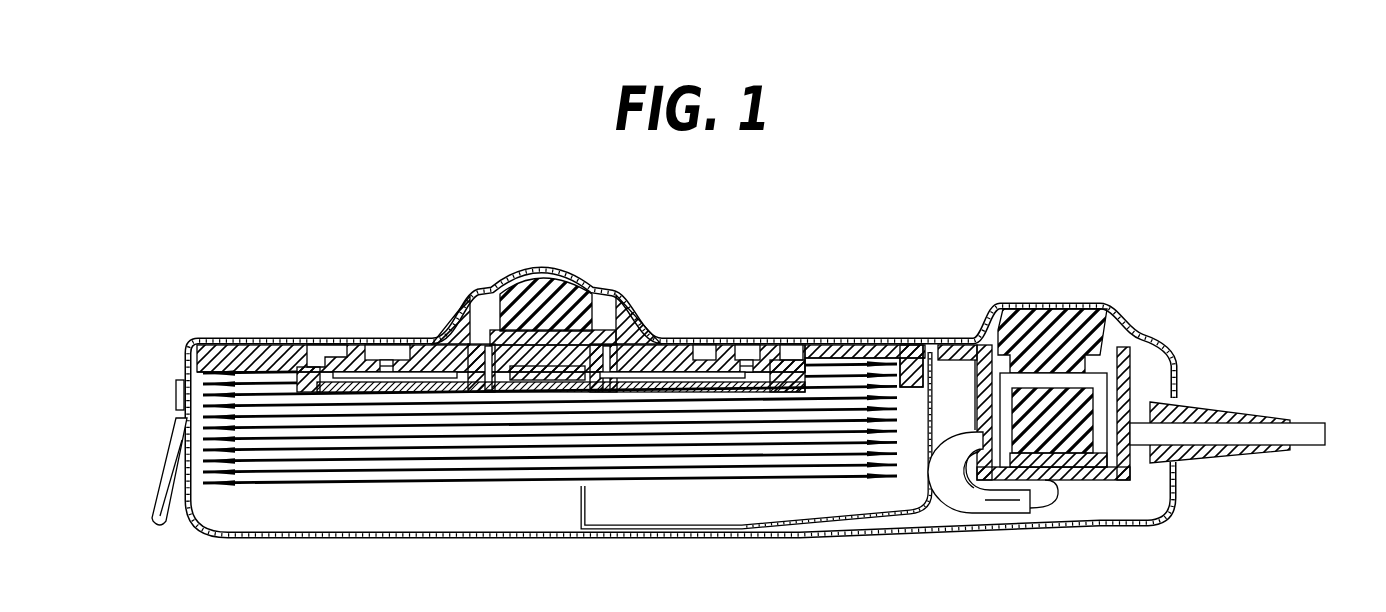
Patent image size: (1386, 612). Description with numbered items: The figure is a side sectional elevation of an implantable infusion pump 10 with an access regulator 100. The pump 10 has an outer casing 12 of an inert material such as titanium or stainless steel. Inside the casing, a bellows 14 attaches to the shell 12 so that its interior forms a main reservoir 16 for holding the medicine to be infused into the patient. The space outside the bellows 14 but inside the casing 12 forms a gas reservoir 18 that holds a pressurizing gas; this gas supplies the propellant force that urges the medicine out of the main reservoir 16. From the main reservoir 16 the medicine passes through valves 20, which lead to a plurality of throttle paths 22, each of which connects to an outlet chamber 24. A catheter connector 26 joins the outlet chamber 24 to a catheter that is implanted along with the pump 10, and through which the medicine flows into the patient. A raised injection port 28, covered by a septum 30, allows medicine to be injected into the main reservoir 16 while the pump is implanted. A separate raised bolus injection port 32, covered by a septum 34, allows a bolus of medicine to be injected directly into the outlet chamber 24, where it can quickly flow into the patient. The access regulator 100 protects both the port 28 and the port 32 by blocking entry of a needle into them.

The infusion pump 10 is at (166, 478).
The outer casing 12 is at (214, 338).
The bellows 14 is at (333, 470).
The main reservoir 16 is at (658, 394).
The gas reservoir 18 is at (420, 514).
The valves 20 is at (395, 358).
The throttle paths 22 is at (320, 350).
The outlet chamber 24 is at (1100, 415).
The catheter connector 26 is at (1295, 447).
The raised injection port 28 is at (634, 292).
The septum 30 is at (540, 288).
The raised bolus injection port 32 is at (1125, 318).
The septum 34 is at (1053, 315).
The access regulator 100 is at (573, 328).